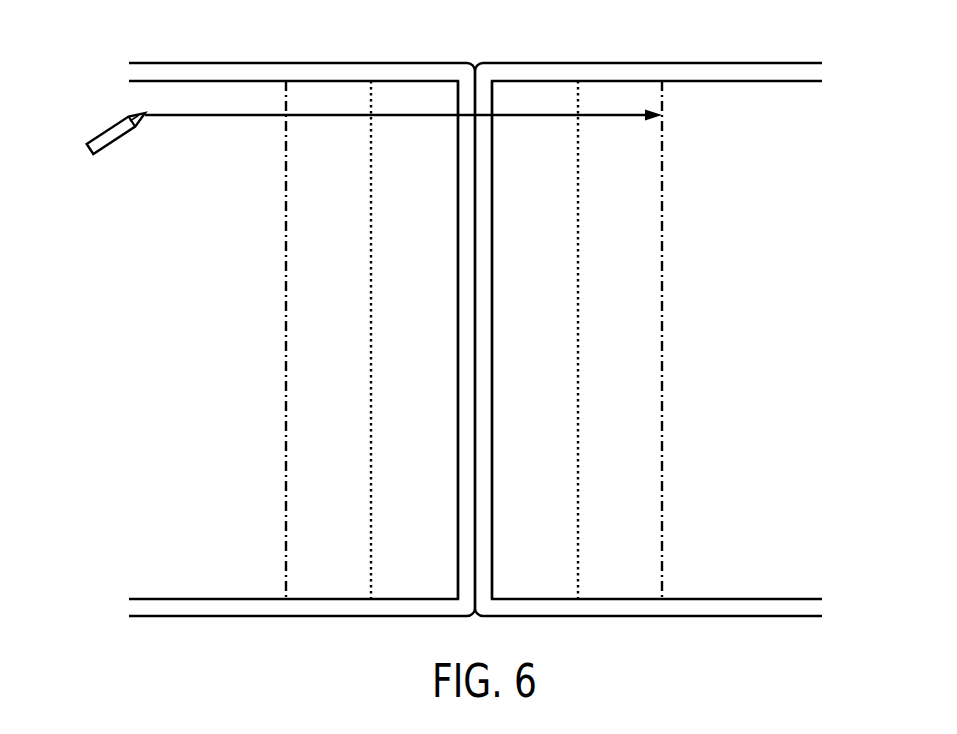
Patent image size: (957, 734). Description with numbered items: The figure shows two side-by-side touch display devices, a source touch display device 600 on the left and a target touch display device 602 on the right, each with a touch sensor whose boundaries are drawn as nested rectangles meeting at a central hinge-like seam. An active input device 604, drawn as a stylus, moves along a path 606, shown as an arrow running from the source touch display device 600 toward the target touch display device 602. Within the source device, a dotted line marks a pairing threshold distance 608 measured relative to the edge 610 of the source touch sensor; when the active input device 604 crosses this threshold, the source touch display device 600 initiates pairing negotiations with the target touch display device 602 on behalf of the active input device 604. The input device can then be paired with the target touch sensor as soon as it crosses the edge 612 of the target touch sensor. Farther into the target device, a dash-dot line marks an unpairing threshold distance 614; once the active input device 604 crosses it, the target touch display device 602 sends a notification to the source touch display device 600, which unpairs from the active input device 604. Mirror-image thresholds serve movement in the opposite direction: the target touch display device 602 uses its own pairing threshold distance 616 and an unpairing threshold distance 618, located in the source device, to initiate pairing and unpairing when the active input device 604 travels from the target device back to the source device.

The source touch display device 600 is at (180, 48).
The target touch display device 602 is at (790, 42).
The active input device 604 is at (94, 152).
The path 606 is at (233, 118).
The pairing threshold distance 608 is at (371, 198).
The edge of the source touch sensor 610 is at (457, 234).
The edge of the target touch sensor 612 is at (492, 270).
The unpairing threshold distance 614 is at (662, 305).
The pairing threshold distance 616 is at (578, 340).
The unpairing threshold distance 618 is at (286, 372).